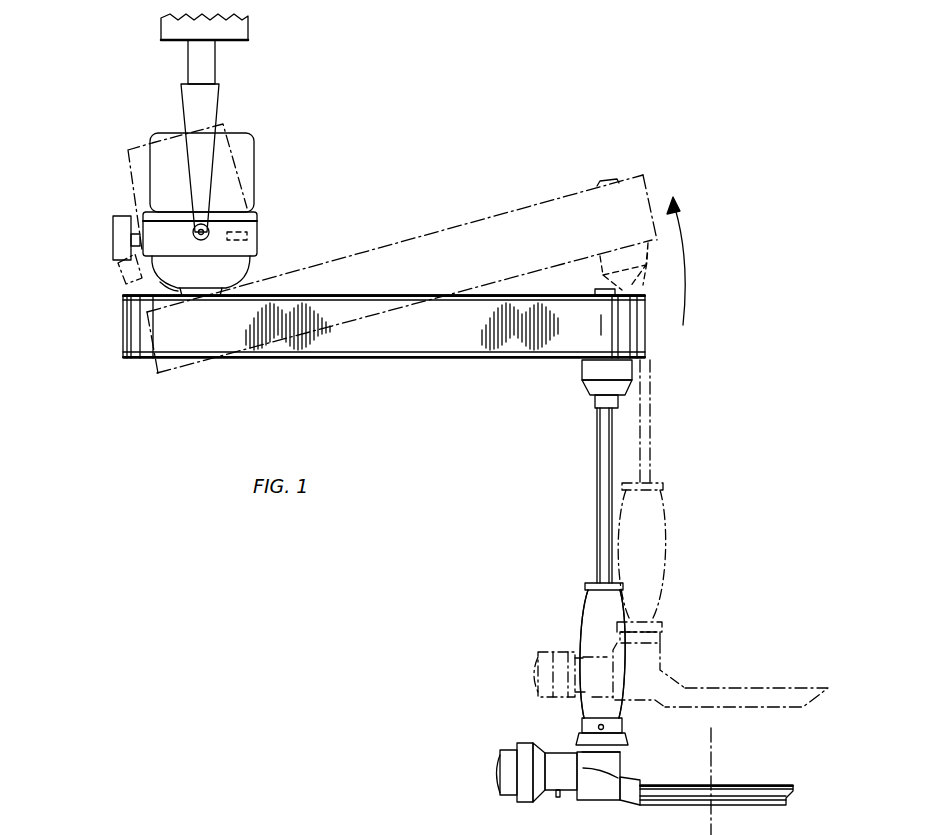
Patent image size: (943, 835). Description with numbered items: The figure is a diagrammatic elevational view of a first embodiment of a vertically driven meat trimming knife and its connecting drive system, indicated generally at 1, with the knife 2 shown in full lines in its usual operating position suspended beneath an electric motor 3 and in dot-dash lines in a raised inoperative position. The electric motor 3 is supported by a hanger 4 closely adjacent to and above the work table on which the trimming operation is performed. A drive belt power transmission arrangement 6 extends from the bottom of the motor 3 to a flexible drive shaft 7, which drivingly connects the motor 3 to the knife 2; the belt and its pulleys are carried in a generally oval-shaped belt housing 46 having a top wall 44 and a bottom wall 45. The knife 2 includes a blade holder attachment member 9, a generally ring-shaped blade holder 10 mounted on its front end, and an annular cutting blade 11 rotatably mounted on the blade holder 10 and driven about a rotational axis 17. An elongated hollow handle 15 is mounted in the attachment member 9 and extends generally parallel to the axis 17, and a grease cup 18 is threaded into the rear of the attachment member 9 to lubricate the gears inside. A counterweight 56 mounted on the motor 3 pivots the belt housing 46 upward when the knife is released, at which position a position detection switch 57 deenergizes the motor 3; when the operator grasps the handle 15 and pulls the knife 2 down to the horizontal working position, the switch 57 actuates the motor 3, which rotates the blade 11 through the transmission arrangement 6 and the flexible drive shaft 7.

The meat trimming knife and connecting drive system 1 is at (379, 185).
The knife 2 is at (574, 598).
The electric motor 3 is at (248, 155).
The hanger 4 is at (183, 96).
The drive belt power transmission arrangement 6 is at (434, 366).
The flexible drive shaft 7 is at (590, 456).
The blade holder attachment member 9 is at (604, 801).
The blade holder 10 is at (632, 771).
The cutting blade 11 is at (794, 711).
The hollow handle 15 is at (590, 628).
The rotational axis 17 is at (713, 753).
The grease cup 18 is at (522, 770).
The top wall 44 is at (388, 295).
The bottom wall 45 is at (508, 362).
The belt housing 46 is at (500, 210).
The counterweight 56 is at (113, 222).
The position detection switch 57 is at (250, 231).